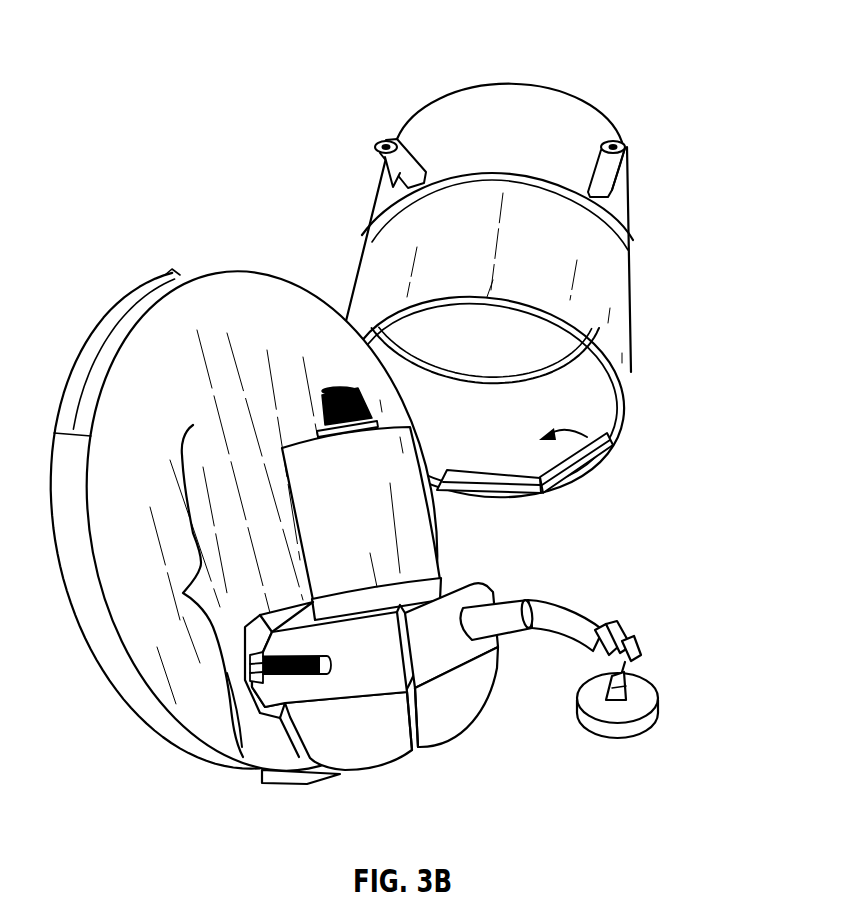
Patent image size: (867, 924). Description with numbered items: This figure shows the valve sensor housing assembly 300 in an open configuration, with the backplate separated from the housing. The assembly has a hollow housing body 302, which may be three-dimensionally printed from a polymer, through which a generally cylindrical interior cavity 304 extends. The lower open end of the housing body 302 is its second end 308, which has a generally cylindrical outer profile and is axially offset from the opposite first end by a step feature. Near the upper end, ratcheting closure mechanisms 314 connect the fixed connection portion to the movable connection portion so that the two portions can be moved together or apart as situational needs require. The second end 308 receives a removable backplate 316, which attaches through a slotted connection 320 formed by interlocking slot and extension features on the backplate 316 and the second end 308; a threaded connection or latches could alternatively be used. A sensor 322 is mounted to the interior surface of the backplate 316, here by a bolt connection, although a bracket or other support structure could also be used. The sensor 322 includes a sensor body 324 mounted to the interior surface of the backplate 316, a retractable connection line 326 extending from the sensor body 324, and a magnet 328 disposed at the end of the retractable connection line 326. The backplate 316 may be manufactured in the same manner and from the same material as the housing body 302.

The valve sensor housing assembly 300 is at (279, 50).
The housing body 302 is at (540, 120).
The interior cavity 304 is at (590, 470).
The second end 308 is at (627, 425).
The ratcheting closure mechanism 314 is at (626, 147).
The removable backplate 316 is at (246, 278).
The slotted connection 320 is at (562, 488).
The sensor 322 is at (187, 588).
The sensor body 324 is at (433, 670).
The retractable connection line 326 is at (585, 618).
The magnet 328 is at (640, 696).